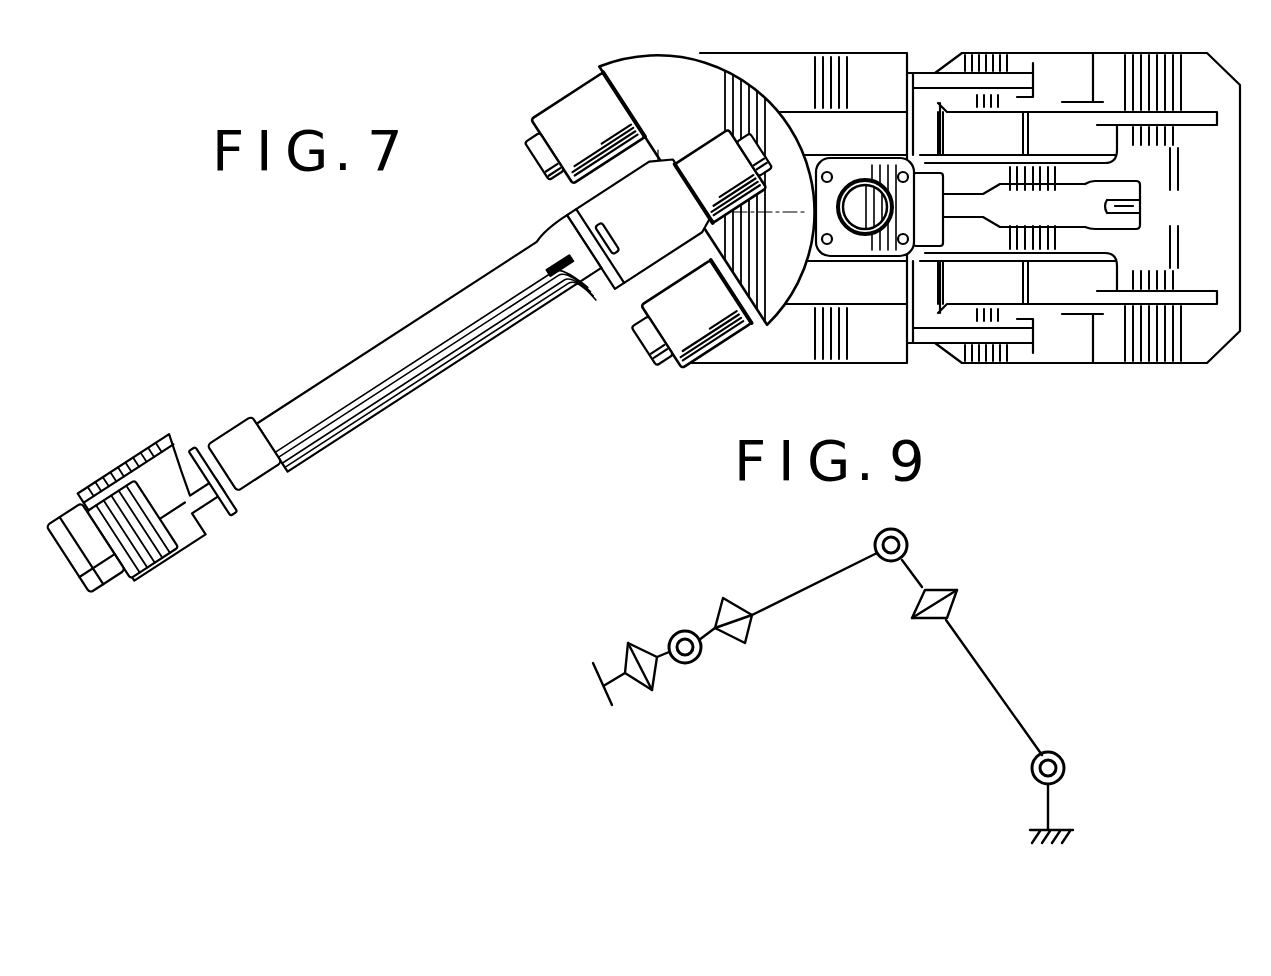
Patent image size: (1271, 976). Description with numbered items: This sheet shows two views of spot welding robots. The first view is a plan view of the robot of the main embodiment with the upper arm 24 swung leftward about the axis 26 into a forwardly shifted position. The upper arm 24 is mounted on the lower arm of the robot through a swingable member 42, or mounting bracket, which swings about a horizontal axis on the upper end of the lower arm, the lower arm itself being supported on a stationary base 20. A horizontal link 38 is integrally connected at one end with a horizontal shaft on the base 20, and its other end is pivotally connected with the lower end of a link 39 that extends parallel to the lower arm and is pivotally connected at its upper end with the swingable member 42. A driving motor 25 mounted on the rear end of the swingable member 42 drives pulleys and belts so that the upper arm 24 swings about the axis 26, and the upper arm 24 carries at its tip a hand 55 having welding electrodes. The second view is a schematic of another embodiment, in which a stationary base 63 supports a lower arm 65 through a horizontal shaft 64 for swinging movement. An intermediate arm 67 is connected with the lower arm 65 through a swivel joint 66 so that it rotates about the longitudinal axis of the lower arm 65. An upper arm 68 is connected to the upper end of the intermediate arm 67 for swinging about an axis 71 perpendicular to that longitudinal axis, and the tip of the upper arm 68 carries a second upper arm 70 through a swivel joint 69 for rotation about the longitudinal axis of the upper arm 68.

In FIG. 7, the stationary base 20 is at (1185, 347).
In FIG. 7, the upper arm 24 is at (402, 343).
In FIG. 7, the driving motor 25 is at (855, 167).
In FIG. 7, the axis 26 is at (659, 208).
In FIG. 7, the horizontal link 38 is at (1140, 207).
In FIG. 7, the link 39 is at (1083, 187).
In FIG. 7, the swingable member 42 is at (940, 230).
In FIG. 7, the hand 55 is at (183, 512).
In FIG. 9, the stationary base 63 is at (1062, 830).
In FIG. 9, the horizontal shaft 64 is at (1063, 760).
In FIG. 9, the lower arm 65 is at (1012, 707).
In FIG. 9, the swivel joint 66 is at (950, 612).
In FIG. 9, the intermediate arm 67 is at (920, 578).
In FIG. 9, the upper arm 68 is at (780, 600).
In FIG. 9, the swivel joint 69 is at (720, 622).
In FIG. 9, the second upper arm 70 is at (717, 633).
In FIG. 9, the axis 71 is at (875, 545).